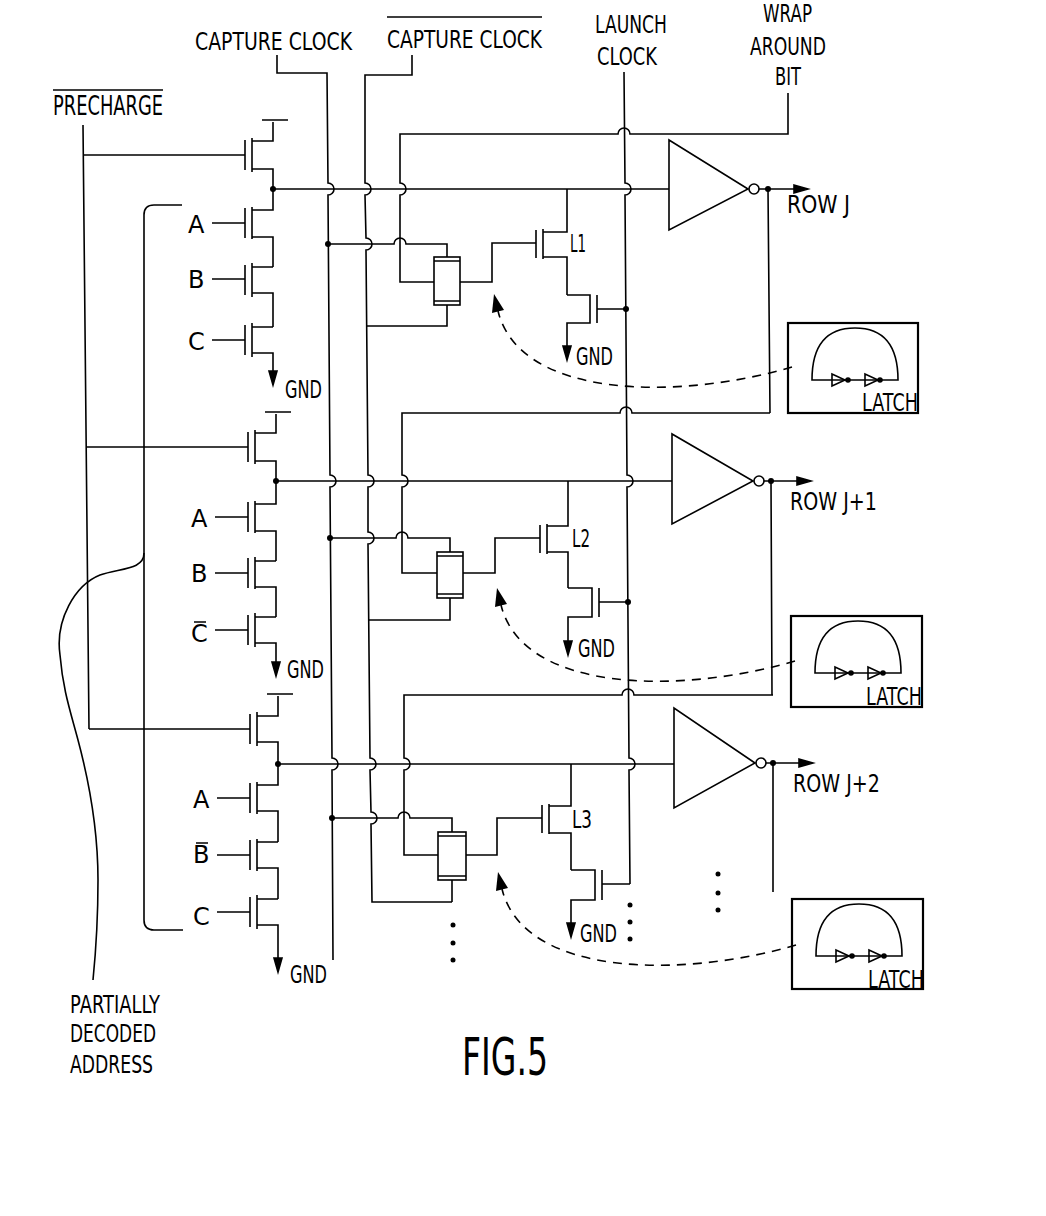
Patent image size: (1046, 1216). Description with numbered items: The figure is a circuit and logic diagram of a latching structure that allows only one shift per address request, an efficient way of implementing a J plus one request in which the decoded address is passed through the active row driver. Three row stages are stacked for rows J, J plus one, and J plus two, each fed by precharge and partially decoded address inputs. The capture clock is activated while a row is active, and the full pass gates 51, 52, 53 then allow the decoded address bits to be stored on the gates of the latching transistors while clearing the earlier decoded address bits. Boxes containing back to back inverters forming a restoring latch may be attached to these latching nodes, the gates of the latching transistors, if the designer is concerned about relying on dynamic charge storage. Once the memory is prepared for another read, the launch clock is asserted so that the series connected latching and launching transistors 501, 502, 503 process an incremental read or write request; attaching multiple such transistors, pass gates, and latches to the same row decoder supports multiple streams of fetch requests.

The full pass gate 51 is at (438, 291).
The full pass gate 52 is at (441, 586).
The full pass gate 53 is at (443, 868).
The launching transistor 501 is at (584, 325).
The launching transistor 502 is at (586, 621).
The launching transistor 503 is at (589, 902).